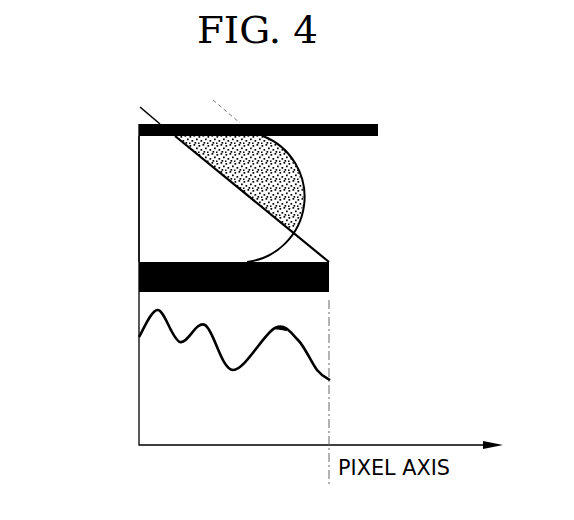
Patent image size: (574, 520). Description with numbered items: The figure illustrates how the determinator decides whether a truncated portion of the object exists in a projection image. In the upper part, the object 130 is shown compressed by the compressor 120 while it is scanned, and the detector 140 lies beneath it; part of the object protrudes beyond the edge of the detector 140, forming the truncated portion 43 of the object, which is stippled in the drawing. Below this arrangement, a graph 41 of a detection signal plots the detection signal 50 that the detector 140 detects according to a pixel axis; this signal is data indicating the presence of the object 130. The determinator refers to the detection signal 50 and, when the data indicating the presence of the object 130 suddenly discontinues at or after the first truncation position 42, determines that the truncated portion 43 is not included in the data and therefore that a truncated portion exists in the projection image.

The graph of a detection signal 41 is at (113, 315).
The first truncation position 42 is at (330, 380).
The truncated portion of the object 43 is at (305, 197).
The detection signal 50 is at (287, 330).
The compressor 120 is at (378, 128).
The object 130 is at (139, 169).
The detector 140 is at (329, 272).